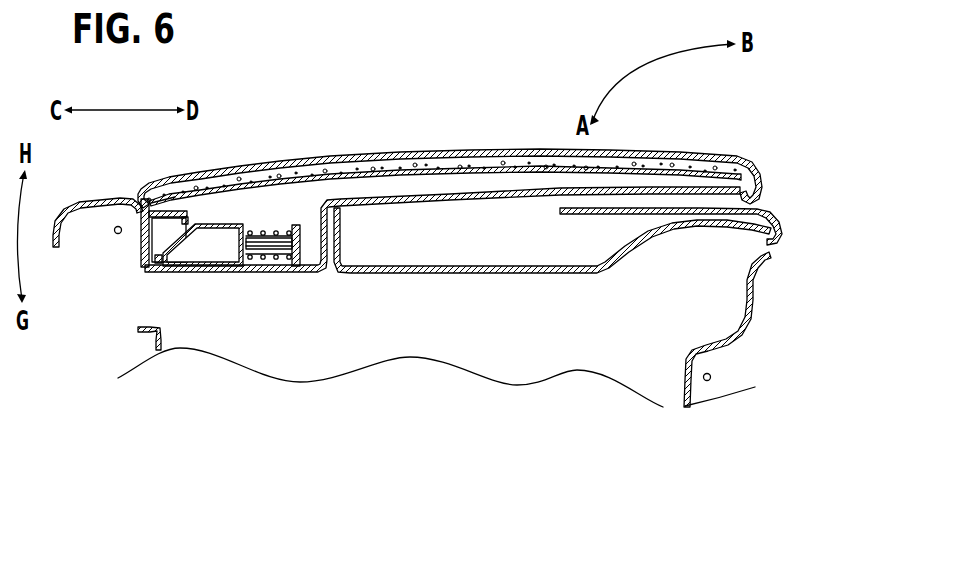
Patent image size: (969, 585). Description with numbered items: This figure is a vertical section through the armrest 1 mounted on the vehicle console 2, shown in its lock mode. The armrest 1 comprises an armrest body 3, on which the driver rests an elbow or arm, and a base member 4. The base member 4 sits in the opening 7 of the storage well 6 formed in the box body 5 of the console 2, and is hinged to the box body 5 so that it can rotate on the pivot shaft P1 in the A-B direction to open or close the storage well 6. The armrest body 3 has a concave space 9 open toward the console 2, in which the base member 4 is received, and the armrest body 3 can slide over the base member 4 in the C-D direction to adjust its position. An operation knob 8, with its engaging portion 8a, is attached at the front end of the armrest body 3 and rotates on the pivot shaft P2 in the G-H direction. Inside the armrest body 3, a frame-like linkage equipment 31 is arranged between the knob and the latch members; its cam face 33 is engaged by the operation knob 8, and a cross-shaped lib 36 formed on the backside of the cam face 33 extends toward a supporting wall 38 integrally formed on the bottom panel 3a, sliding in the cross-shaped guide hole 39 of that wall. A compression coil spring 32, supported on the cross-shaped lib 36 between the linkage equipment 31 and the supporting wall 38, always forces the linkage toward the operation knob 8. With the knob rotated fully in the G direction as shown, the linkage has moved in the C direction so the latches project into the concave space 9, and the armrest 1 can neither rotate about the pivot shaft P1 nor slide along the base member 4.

The armrest 1 is at (458, 145).
The vehicle console 2 is at (760, 305).
The armrest body 3 is at (361, 165).
The bottom panel 3a is at (403, 190).
The base member 4 is at (628, 212).
The box body 5 is at (665, 383).
The storage well 6 is at (507, 367).
The opening 7 is at (476, 336).
The operation knob 8 is at (95, 205).
The engaging portion of hook member 8a is at (180, 188).
The concave space 9 is at (430, 248).
The linkage equipment 31 is at (222, 226).
The compression coil spring 32 is at (273, 231).
The cam face 33 is at (149, 240).
The cross-shaped lib 36 is at (270, 245).
The supporting wall 38 is at (308, 238).
The guide hole 39 is at (300, 246).
The pivot shaft P1 is at (710, 382).
The pivot shaft P2 is at (116, 234).